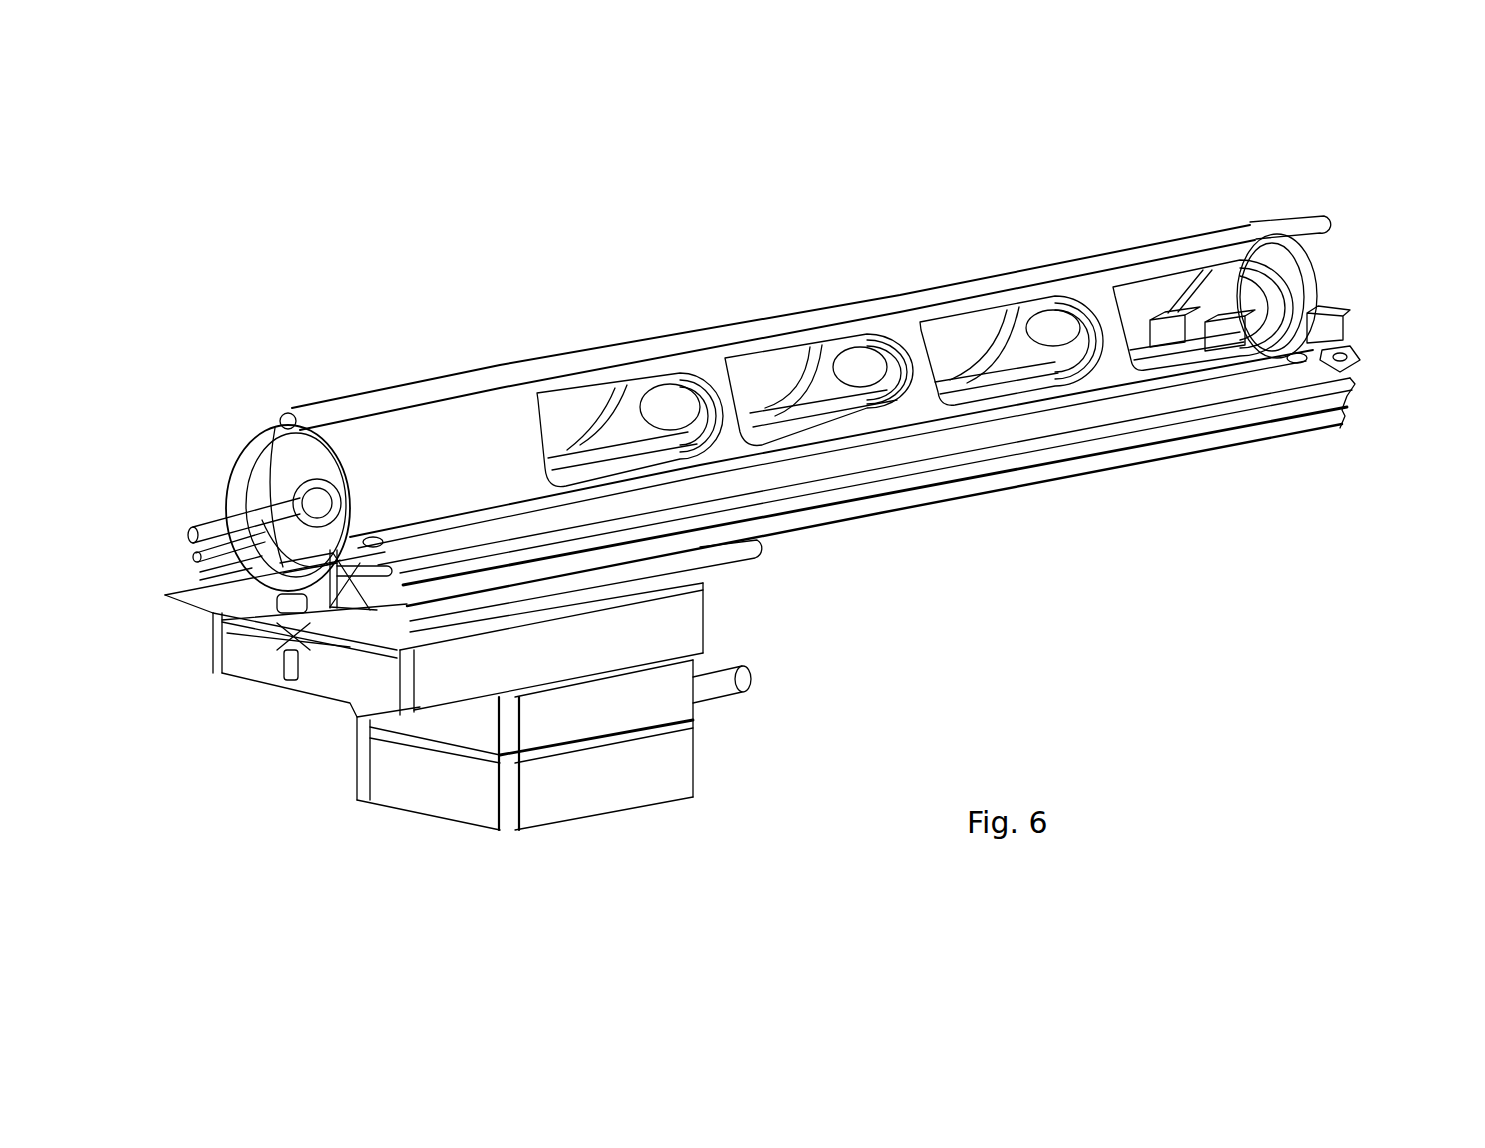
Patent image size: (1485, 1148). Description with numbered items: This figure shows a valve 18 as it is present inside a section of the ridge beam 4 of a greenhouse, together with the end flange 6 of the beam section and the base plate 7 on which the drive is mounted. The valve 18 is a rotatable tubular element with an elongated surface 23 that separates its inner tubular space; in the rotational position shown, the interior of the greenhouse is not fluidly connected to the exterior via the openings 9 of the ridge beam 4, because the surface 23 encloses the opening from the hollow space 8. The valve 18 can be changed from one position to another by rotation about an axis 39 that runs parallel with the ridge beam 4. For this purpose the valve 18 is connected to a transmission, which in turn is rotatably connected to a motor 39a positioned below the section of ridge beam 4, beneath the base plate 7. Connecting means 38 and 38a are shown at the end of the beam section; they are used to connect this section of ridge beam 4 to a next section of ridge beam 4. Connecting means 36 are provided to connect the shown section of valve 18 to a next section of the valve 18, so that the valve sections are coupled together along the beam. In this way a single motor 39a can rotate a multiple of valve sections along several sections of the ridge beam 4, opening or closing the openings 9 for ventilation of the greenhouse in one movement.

The ridge beam 4 is at (463, 418).
The end flange ring 6 is at (237, 447).
The base plate with rails 7 is at (443, 487).
The hollow space 8 is at (634, 418).
The openings 9 is at (563, 418).
The valve 18 is at (818, 378).
The elongated surface 23 is at (997, 390).
The connecting means 36 is at (1338, 320).
The connecting means 38 is at (1360, 360).
The connecting means 38a is at (1312, 224).
The axis 39 is at (290, 507).
The motor 39a is at (665, 763).